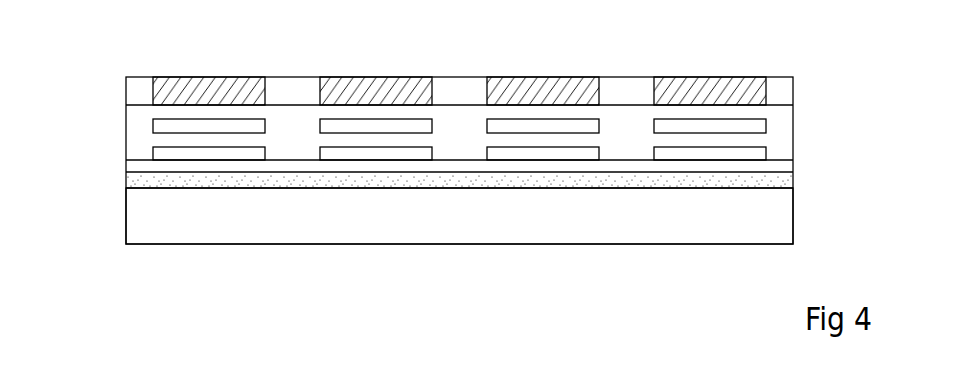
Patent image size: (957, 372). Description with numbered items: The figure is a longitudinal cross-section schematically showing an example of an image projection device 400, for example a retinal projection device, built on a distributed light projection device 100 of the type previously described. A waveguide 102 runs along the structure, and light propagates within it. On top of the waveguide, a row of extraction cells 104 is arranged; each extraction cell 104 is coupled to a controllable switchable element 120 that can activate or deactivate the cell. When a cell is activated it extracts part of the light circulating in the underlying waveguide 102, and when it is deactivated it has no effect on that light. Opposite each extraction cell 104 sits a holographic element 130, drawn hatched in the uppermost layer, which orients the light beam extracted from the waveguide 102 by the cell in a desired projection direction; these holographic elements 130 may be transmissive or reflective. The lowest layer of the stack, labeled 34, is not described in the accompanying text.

The image projection device 400 is at (839, 52).
The distributed light projection device 100 is at (815, 147).
The holographic element 130 is at (155, 92).
The controllable switchable element 120 is at (168, 125).
The extraction cell 104 is at (168, 153).
The waveguide 102 is at (155, 180).
The substrate 34 is at (148, 222).